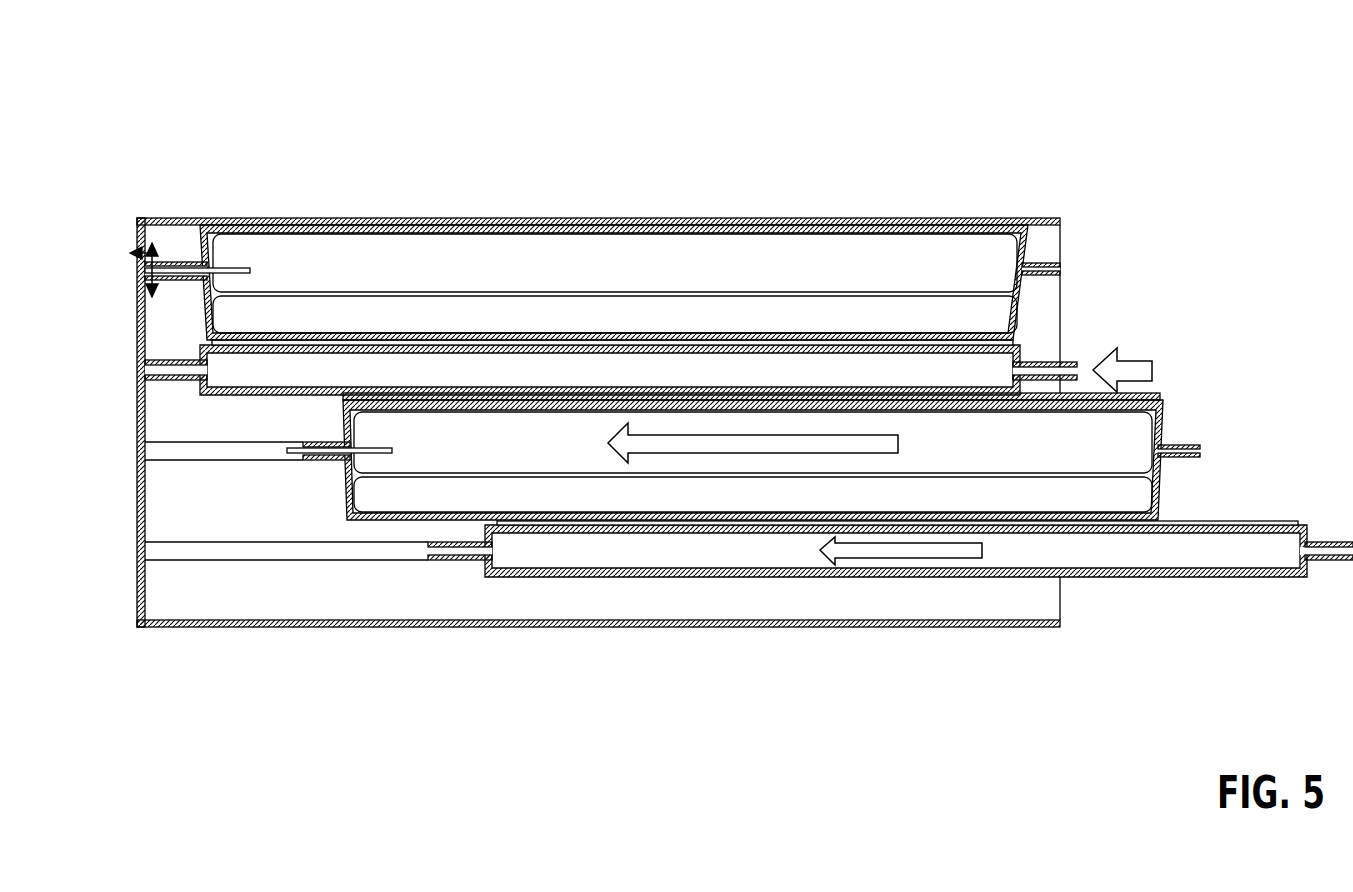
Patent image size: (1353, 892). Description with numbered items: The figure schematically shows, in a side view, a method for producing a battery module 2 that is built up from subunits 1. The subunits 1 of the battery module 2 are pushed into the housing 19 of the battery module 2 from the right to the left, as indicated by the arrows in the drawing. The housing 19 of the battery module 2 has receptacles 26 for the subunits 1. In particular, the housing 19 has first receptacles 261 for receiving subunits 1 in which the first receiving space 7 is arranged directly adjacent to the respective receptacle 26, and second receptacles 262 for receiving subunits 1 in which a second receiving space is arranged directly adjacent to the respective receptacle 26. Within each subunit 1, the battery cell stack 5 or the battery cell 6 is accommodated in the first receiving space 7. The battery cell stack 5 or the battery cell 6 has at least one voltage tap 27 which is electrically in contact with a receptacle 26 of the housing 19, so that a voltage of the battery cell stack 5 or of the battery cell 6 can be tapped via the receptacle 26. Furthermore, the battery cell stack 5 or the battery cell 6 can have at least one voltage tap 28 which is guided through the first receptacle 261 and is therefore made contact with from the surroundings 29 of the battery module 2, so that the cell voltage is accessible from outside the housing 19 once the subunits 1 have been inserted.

The subunit 1 is at (691, 326).
The battery module 2 is at (345, 705).
The battery cell stack 5 is at (630, 246).
The battery cell 6 is at (481, 253).
The first receiving space 7 is at (678, 313).
The housing 19 is at (138, 583).
The receptacle 26 is at (132, 293).
The first receptacle 261 is at (176, 245).
The second receptacle 262 is at (160, 384).
The voltage tap 27 is at (219, 221).
The voltage tap 28 is at (237, 265).
The surroundings 29 is at (370, 89).